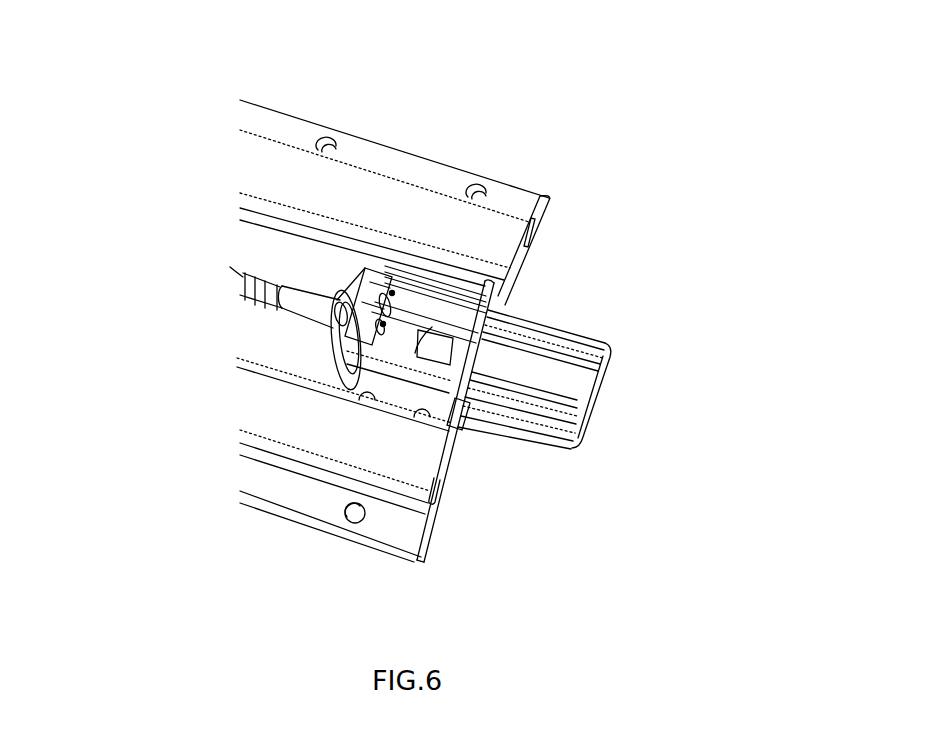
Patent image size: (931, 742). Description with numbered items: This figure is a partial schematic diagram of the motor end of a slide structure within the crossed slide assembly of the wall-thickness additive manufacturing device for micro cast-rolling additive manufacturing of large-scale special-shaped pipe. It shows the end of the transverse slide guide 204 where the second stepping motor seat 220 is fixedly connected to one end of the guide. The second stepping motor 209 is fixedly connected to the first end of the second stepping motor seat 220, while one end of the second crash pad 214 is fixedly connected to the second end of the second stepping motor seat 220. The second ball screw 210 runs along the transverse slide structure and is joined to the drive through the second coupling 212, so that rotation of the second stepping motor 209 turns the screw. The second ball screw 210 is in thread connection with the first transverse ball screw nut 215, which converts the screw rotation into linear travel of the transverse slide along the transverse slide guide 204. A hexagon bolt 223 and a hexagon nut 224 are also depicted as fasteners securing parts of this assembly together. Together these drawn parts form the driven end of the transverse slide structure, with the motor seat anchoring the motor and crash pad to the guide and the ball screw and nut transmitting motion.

The transverse slide guide 204 is at (283, 173).
The second stepping motor 209 is at (558, 362).
The second ball screw 210 is at (240, 274).
The second coupling 212 is at (433, 342).
The second crash pad 214 is at (390, 311).
The first transverse ball screw nut 215 is at (310, 303).
The second stepping motor seat 220 is at (503, 282).
The hexagon bolt 223 is at (335, 308).
The hexagon nut 224 is at (380, 325).